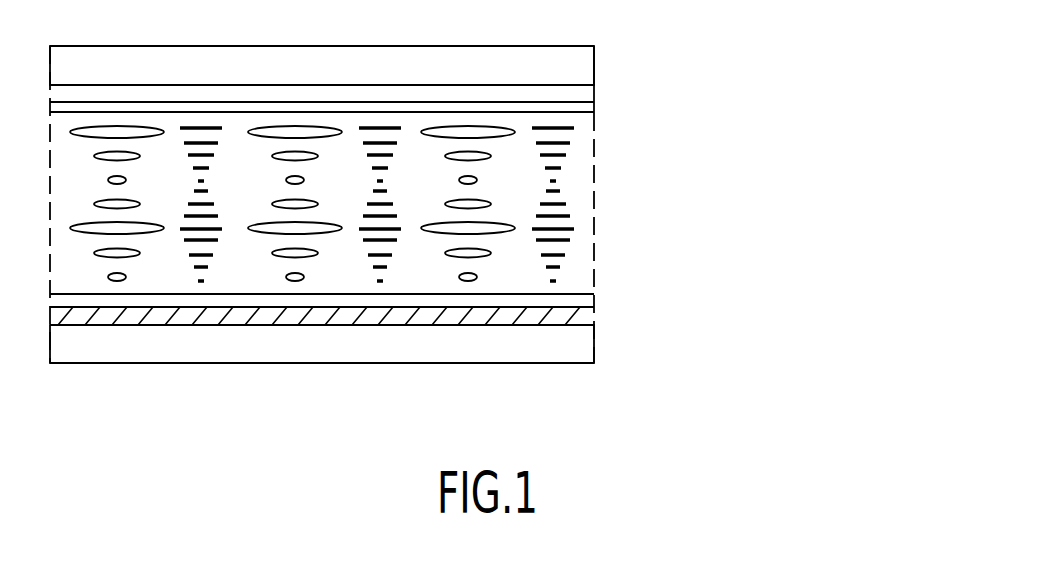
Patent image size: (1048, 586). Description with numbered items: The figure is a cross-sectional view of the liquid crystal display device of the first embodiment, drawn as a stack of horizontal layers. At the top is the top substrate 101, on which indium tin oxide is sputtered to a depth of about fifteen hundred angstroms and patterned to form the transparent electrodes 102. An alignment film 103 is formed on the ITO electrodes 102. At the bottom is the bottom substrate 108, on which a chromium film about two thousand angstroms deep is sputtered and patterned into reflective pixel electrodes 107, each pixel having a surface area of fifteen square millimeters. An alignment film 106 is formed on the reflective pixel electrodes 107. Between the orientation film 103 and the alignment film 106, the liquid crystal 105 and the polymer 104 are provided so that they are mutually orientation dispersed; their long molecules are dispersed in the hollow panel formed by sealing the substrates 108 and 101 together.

The top substrate 101 is at (580, 68).
The transparent electrodes 102 is at (584, 92).
The alignment film 103 is at (582, 109).
The polymer 104 is at (475, 157).
The liquid crystal 105 is at (560, 217).
The alignment film 106 is at (593, 303).
The reflective pixel electrodes 107 is at (588, 314).
The bottom substrate 108 is at (588, 342).